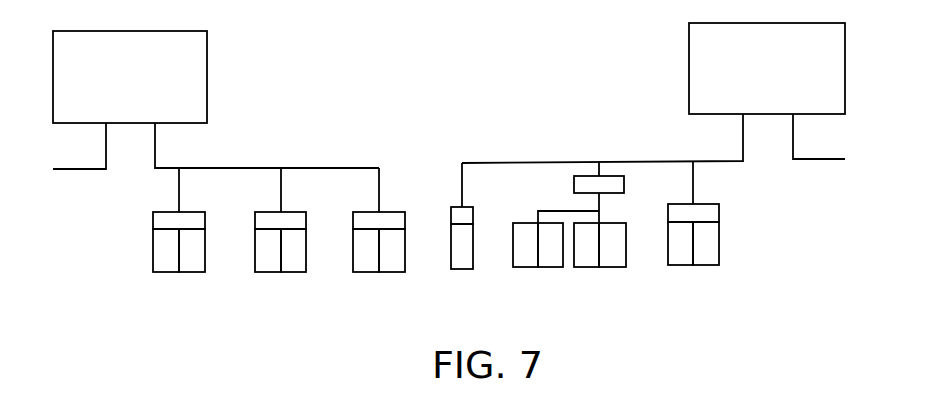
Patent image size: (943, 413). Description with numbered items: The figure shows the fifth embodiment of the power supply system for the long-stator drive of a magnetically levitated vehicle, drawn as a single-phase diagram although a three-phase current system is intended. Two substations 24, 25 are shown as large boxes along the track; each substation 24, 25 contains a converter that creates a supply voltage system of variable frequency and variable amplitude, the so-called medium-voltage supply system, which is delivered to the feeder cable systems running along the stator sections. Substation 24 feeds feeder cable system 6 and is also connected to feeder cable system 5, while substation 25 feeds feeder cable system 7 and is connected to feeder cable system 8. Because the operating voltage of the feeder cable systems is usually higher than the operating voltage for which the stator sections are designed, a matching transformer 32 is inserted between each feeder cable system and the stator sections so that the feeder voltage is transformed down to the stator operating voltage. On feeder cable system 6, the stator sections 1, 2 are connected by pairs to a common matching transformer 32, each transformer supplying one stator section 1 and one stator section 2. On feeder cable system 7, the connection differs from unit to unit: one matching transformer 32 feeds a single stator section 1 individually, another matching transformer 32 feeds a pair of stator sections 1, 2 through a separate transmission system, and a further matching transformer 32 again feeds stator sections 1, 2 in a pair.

The stator section 1 is at (168, 267).
The stator section 2 is at (188, 267).
The feeder cable system 5 is at (91, 170).
The feeder cable system 6 is at (213, 167).
The feeder cable system 7 is at (546, 162).
The feeder cable system 8 is at (823, 158).
The substation 24 is at (192, 71).
The substation 25 is at (702, 59).
The matching transformer 32 is at (192, 220).